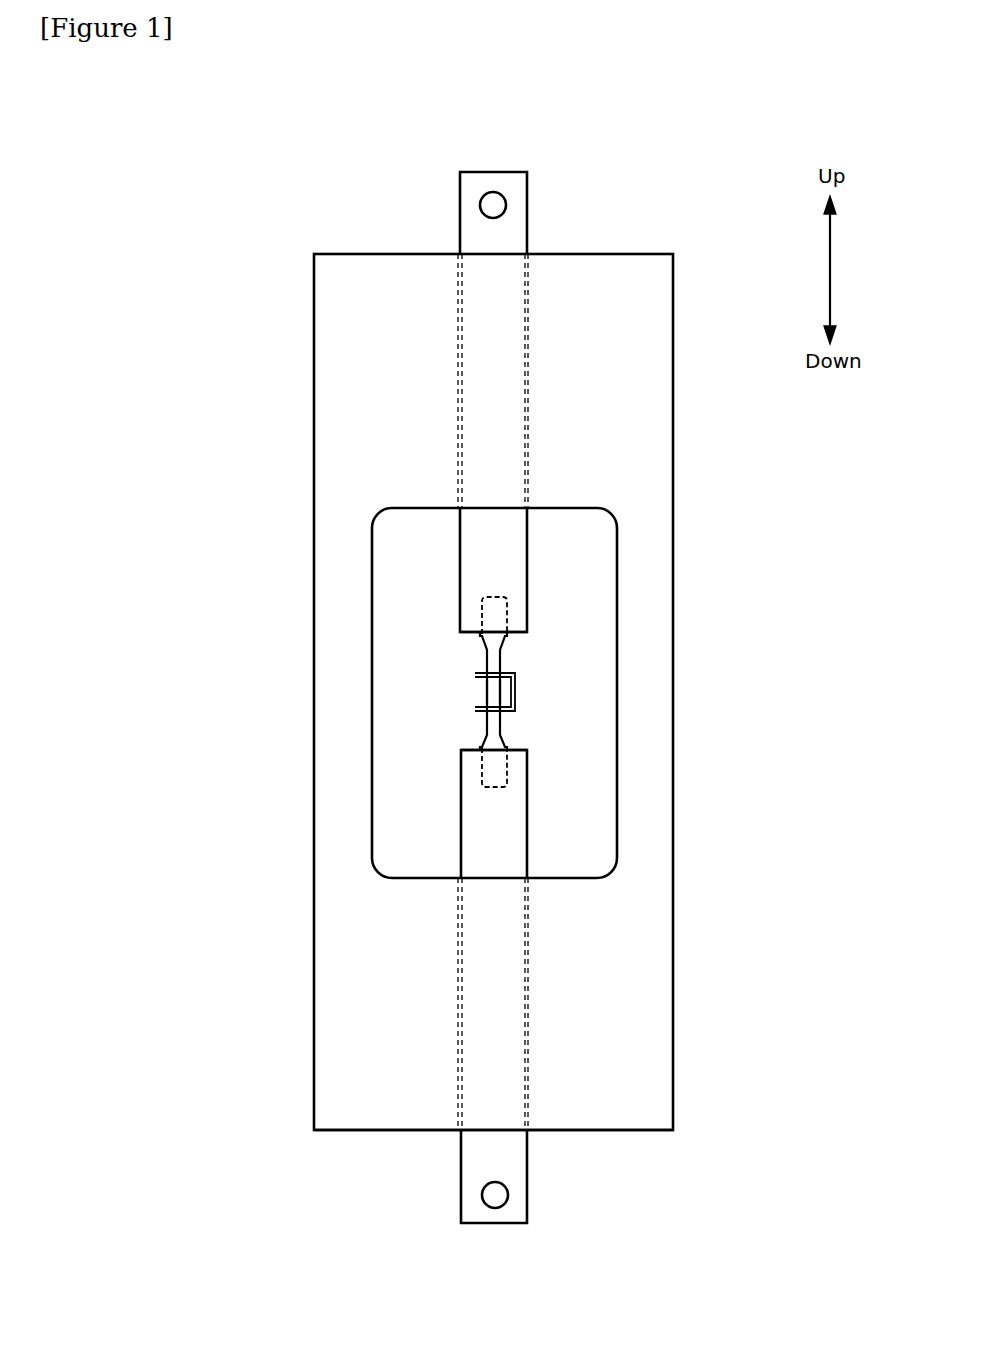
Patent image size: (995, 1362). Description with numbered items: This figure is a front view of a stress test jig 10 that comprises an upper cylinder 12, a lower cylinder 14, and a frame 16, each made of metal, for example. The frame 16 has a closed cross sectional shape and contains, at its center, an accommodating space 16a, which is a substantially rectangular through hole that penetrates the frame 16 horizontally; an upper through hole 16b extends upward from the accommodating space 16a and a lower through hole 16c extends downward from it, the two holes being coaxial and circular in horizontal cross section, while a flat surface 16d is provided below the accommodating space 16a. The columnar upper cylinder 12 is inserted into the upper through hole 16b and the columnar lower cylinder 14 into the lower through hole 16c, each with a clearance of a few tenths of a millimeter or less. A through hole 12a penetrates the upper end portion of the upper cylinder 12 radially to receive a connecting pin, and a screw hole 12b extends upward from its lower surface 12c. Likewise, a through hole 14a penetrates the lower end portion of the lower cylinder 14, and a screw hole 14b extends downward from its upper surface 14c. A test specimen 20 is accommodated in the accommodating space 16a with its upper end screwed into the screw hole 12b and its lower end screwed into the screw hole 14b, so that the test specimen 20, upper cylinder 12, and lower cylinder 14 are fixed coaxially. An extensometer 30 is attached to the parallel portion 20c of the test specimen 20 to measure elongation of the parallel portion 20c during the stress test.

The stress test jig 10 is at (166, 197).
The upper cylinder 12 is at (512, 180).
The through hole 12a is at (488, 200).
The screw hole 12b is at (506, 620).
The lower surface 12c is at (470, 633).
The lower cylinder 14 is at (470, 1215).
The through hole 14a is at (500, 1190).
The screw hole 14b is at (482, 770).
The upper surface 14c is at (518, 749).
The frame 16 is at (638, 260).
The accommodating space 16a is at (565, 878).
The upper through hole 16b is at (522, 318).
The lower through hole 16c is at (522, 1082).
The flat surface 16d is at (372, 1132).
The test specimen 20 is at (498, 658).
The parallel portion 20c is at (490, 692).
The extensometer 30 is at (520, 687).